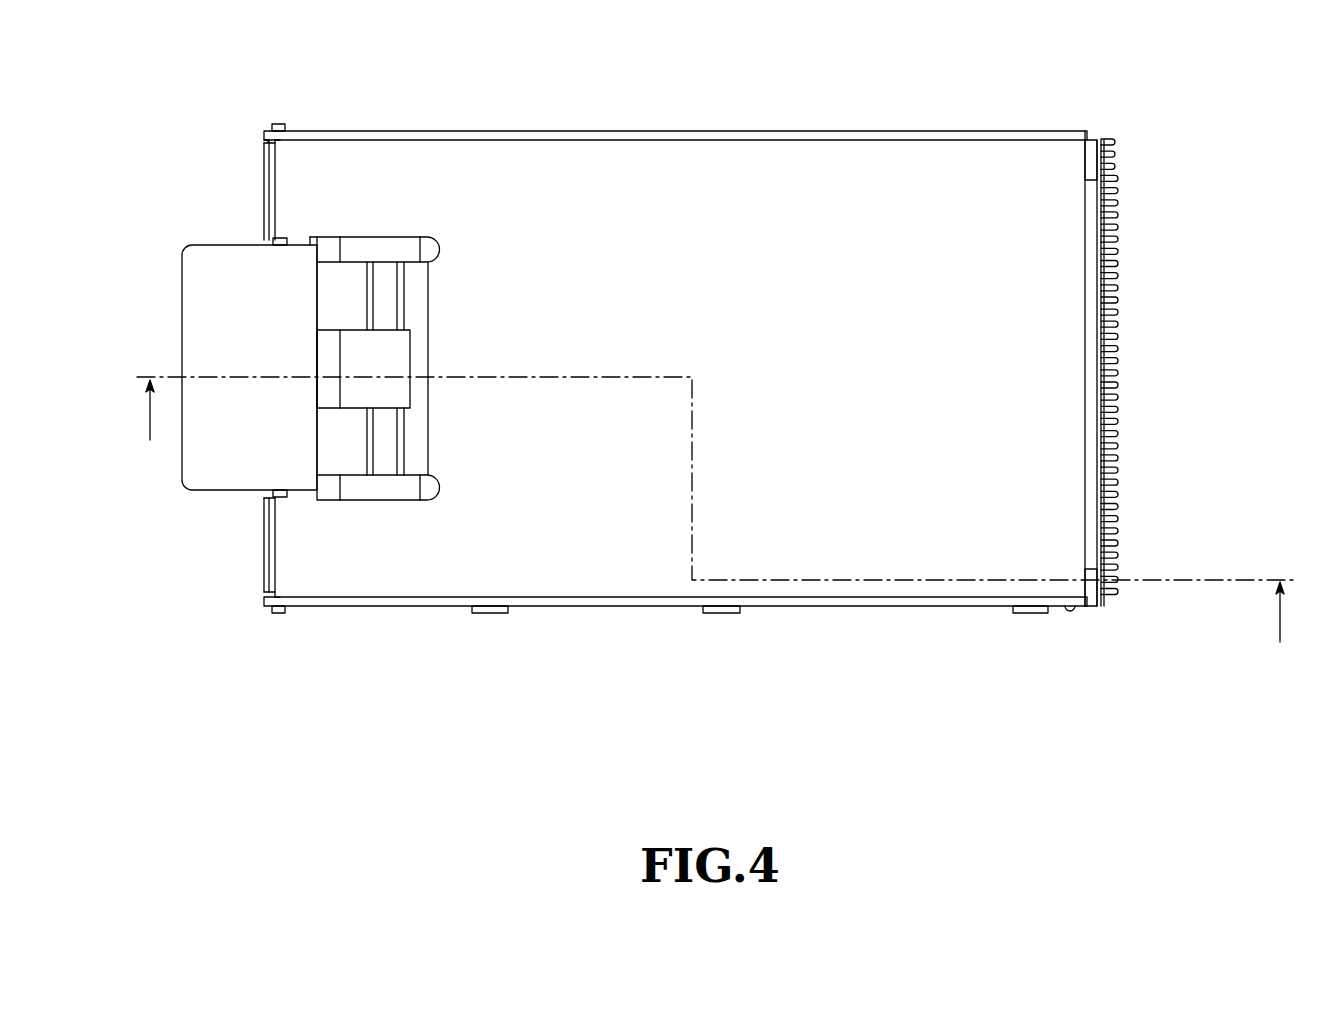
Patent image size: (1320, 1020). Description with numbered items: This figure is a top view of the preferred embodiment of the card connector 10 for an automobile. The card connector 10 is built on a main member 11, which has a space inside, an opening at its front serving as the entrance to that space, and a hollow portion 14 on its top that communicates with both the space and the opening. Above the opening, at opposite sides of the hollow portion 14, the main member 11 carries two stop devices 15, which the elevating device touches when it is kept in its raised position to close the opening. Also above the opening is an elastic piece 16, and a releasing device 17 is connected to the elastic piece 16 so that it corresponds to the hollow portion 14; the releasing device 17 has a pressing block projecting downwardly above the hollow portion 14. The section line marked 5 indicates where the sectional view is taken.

The card connector 10 is at (249, 686).
The main member 11 is at (437, 607).
The hollow portion 14 is at (365, 500).
The stop devices 15 is at (262, 202).
The elastic piece 16 is at (333, 262).
The releasing device 17 is at (182, 323).
The section line 5 is at (715, 527).